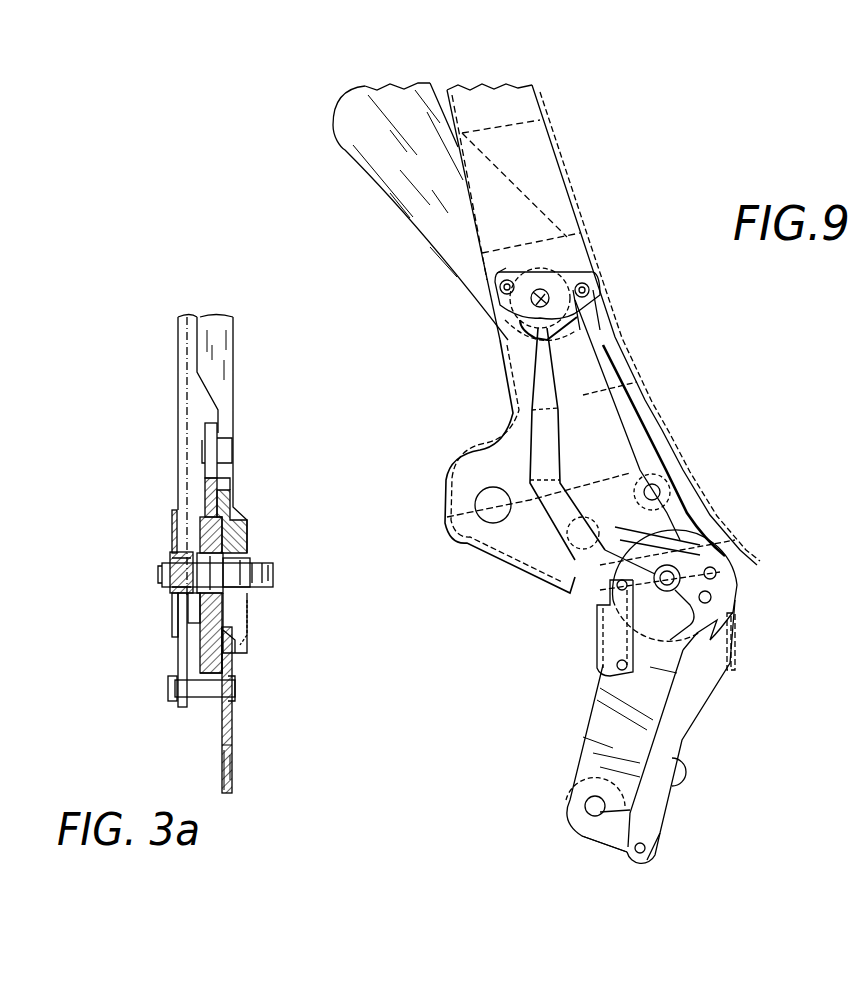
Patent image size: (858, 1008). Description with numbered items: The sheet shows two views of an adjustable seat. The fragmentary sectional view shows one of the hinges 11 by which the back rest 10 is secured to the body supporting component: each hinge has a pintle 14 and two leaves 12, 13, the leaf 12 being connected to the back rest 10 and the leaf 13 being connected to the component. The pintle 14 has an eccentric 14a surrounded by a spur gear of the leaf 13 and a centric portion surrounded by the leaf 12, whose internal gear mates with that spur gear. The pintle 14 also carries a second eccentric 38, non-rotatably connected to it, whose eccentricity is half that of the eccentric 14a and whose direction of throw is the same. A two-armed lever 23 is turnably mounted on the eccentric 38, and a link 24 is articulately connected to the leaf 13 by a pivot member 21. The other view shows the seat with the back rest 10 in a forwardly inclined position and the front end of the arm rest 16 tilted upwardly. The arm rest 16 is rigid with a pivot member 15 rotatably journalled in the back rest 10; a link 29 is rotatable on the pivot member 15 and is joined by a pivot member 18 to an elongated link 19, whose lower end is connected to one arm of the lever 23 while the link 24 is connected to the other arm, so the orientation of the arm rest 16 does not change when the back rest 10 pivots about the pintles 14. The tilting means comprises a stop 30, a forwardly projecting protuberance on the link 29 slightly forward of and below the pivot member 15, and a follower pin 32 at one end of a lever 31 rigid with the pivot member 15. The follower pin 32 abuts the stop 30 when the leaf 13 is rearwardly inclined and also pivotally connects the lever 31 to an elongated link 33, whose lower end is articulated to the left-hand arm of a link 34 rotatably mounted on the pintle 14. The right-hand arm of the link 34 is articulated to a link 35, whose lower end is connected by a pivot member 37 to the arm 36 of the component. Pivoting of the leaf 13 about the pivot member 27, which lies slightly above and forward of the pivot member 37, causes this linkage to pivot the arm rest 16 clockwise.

In FIG. 3a, the back rest 10 is at (223, 363).
In FIG. 9, the back rest 10 is at (537, 148).
In FIG. 9, the hinge 11 is at (783, 568).
In FIG. 3a, the leaf 12 is at (207, 491).
In FIG. 9, the leaf 12 is at (740, 573).
In FIG. 3a, the leaf 13 is at (233, 734).
In FIG. 9, the leaf 13 is at (605, 733).
In FIG. 3a, the pintle 14 is at (262, 566).
In FIG. 9, the pintle 14 is at (690, 566).
In FIG. 3a, the eccentric 14a is at (228, 562).
In FIG. 9, the first pivot member 15 is at (549, 296).
In FIG. 9, the arm rest 16 is at (436, 228).
In FIG. 9, the pivot member 18 is at (600, 292).
In FIG. 3a, the second link 19 is at (178, 403).
In FIG. 9, the second link 19 is at (615, 382).
In FIG. 3a, the pivot member 21 is at (170, 690).
In FIG. 9, the pivot member 21 is at (614, 667).
In FIG. 3a, the two-armed lever 23 is at (174, 620).
In FIG. 9, the two-armed lever 23 is at (735, 538).
In FIG. 3a, the fourth link 24 is at (184, 663).
In FIG. 9, the fourth link 24 is at (597, 643).
In FIG. 9, the pivot member 27 is at (585, 804).
In FIG. 9, the link 29 is at (602, 272).
In FIG. 9, the stop 30 is at (508, 342).
In FIG. 9, the first link 31 is at (497, 273).
In FIG. 9, the follower pin 32 is at (500, 290).
In FIG. 9, the second link 33 is at (540, 400).
In FIG. 9, the third link 34 is at (738, 636).
In FIG. 9, the fourth link 35 is at (702, 700).
In FIG. 9, the arm 36 is at (602, 838).
In FIG. 9, the pivot member 37 is at (656, 850).
In FIG. 3a, the second eccentric 38 is at (170, 556).
In FIG. 9, the second eccentric 38 is at (697, 543).